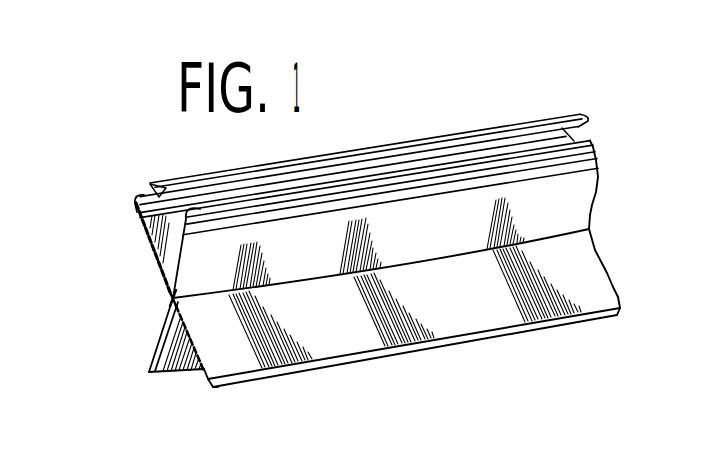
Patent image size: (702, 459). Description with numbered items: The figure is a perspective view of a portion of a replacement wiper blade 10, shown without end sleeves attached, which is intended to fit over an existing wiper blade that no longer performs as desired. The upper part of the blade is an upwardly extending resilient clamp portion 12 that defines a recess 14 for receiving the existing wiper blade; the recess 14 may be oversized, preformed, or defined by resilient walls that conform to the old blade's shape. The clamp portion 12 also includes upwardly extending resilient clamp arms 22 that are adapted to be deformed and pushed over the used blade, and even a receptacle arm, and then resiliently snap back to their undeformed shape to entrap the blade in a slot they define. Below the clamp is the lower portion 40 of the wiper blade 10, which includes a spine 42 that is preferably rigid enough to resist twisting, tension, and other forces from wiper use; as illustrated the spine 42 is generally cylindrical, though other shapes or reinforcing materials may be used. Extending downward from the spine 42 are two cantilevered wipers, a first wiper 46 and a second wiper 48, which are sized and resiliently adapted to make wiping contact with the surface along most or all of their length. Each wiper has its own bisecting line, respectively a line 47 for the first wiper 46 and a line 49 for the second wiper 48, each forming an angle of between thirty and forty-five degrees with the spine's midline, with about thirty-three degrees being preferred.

The replacement wiper blade 10 is at (624, 189).
The resilient clamp portion 12 is at (143, 222).
The recess 14 is at (139, 257).
The resilient clamp arms 22 is at (553, 120).
The lower portion 40 is at (620, 268).
The spine 42 is at (170, 300).
The first wiper 46 is at (165, 370).
The bisecting line of first wiper 47 is at (152, 357).
The second wiper 48 is at (239, 362).
The bisecting line of second wiper 49 is at (202, 372).